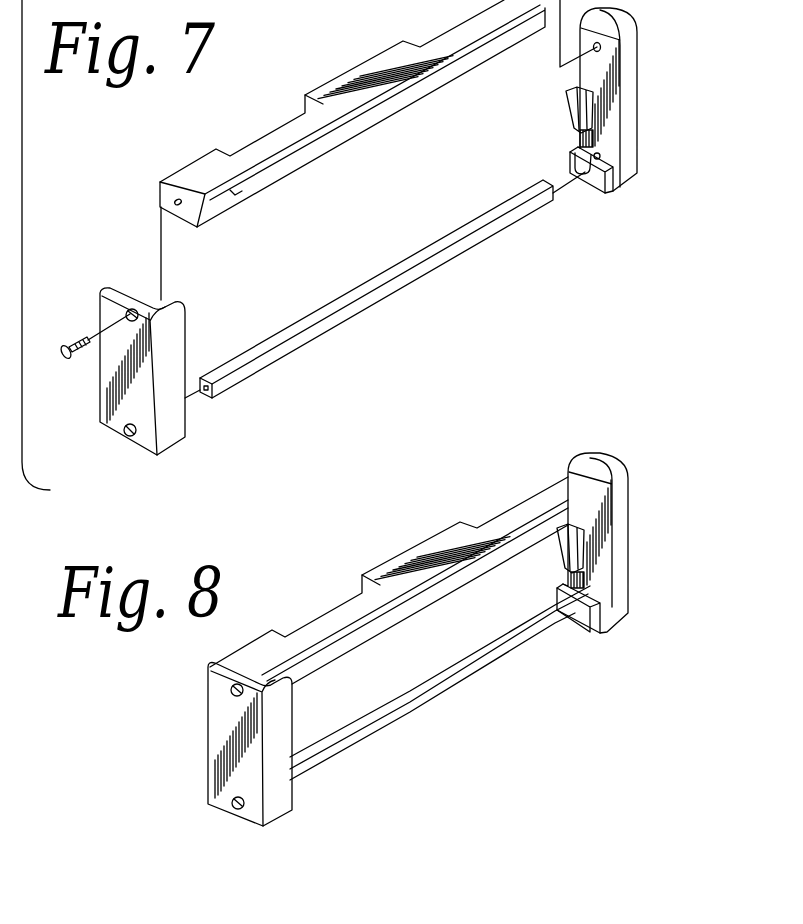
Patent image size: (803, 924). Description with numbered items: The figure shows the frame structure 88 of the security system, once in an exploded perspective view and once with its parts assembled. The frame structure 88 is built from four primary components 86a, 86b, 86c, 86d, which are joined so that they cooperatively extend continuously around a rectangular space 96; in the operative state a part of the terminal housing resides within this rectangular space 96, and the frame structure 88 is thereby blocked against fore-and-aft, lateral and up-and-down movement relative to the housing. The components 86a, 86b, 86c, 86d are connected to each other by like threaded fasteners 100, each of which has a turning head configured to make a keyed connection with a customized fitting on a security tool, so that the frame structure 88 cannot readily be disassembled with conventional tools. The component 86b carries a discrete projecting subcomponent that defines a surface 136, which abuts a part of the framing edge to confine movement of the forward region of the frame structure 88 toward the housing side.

In FIG. 7, the component 86a is at (257, 133).
In FIG. 8, the component 86a is at (325, 612).
In FIG. 7, the component 86b is at (638, 108).
In FIG. 8, the component 86b is at (648, 526).
In FIG. 7, the component 86c is at (425, 271).
In FIG. 8, the component 86c is at (425, 707).
In FIG. 7, the component 86d is at (110, 358).
In FIG. 8, the component 86d is at (217, 752).
In FIG. 7, the threaded fastener 100 is at (80, 337).
In FIG. 8, the threaded fastener 100 is at (232, 689).
In FIG. 8, the frame structure 88 is at (516, 472).
In FIG. 8, the surface 136 is at (572, 542).
In FIG. 8, the rectangular space 96 is at (350, 715).